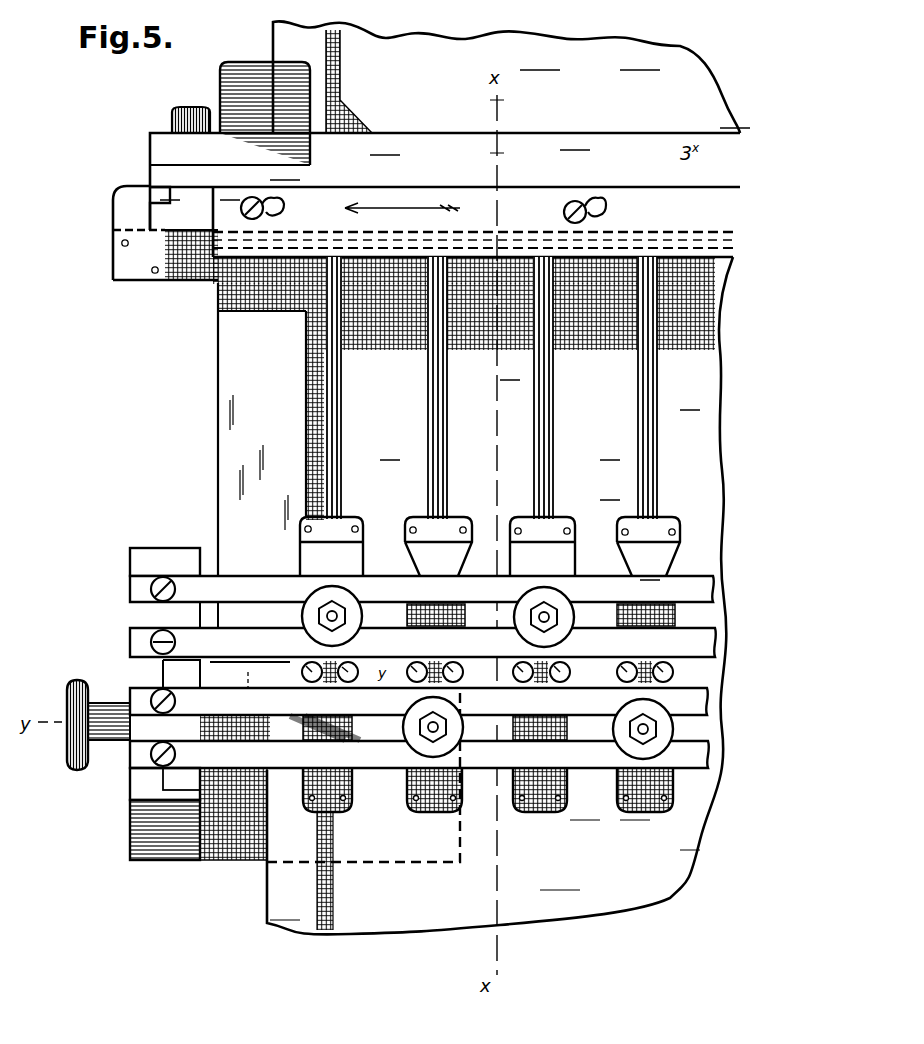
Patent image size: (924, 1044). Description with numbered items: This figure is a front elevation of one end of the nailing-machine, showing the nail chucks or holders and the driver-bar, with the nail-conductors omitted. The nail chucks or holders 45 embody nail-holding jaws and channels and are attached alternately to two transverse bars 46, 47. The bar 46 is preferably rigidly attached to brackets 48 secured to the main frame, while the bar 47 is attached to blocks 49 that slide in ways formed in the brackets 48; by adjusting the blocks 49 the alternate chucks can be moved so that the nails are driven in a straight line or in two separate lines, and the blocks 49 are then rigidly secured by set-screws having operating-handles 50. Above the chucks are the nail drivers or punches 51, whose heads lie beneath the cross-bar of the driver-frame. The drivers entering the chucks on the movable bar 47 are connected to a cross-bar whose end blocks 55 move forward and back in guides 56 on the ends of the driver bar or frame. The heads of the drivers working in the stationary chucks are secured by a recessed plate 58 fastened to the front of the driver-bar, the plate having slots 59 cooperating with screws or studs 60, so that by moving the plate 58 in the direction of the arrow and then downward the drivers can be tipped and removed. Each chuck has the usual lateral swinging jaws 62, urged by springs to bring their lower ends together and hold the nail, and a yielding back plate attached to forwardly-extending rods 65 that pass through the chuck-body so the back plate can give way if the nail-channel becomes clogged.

The nail chucks or holders 45 is at (490, 546).
The transverse bar 46 is at (423, 616).
The transverse bar 47 is at (419, 728).
The brackets 48 is at (130, 563).
The blocks 49 is at (148, 725).
The operating-handles 50 is at (88, 688).
The nail drivers or punches 51 is at (668, 403).
The blocks 55 is at (165, 233).
The guides 56 is at (165, 200).
The recessed plate 58 is at (690, 220).
The slots 59 is at (286, 206).
The screws or studs 60 is at (243, 207).
The lateral swinging jaws 62 is at (405, 560).
The forwardly-extending rods 65 is at (306, 661).